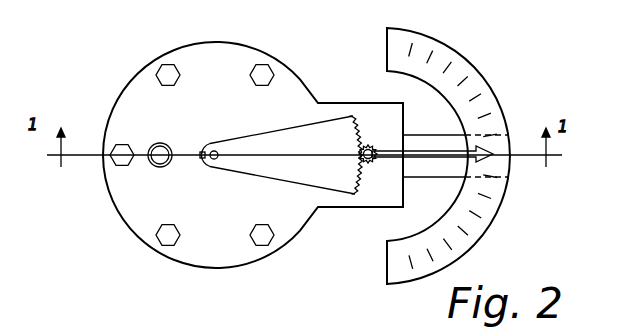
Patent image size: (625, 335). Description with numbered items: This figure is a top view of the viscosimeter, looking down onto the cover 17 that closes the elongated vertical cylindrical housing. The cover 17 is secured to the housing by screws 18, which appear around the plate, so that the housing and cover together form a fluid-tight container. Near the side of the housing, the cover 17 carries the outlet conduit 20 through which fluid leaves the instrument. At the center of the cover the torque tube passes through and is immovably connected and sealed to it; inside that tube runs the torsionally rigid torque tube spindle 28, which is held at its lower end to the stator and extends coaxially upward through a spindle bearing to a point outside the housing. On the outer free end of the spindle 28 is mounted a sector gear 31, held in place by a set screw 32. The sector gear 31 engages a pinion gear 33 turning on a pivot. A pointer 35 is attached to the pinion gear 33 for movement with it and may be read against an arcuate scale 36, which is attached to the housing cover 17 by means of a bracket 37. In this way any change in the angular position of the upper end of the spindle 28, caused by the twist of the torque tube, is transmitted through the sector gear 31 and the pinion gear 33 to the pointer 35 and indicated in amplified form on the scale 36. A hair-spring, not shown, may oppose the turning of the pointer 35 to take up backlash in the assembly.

The cover 17 is at (294, 74).
The screws 18 is at (122, 165).
The outlet conduit 20 is at (157, 144).
The torque tube spindle 28 is at (214, 151).
The sector gear 31 is at (275, 141).
The set screw 32 is at (202, 152).
The pinion gear 33 is at (370, 146).
The pointer 35 is at (423, 152).
The arcuate scale 36 is at (468, 61).
The bracket 37 is at (447, 178).